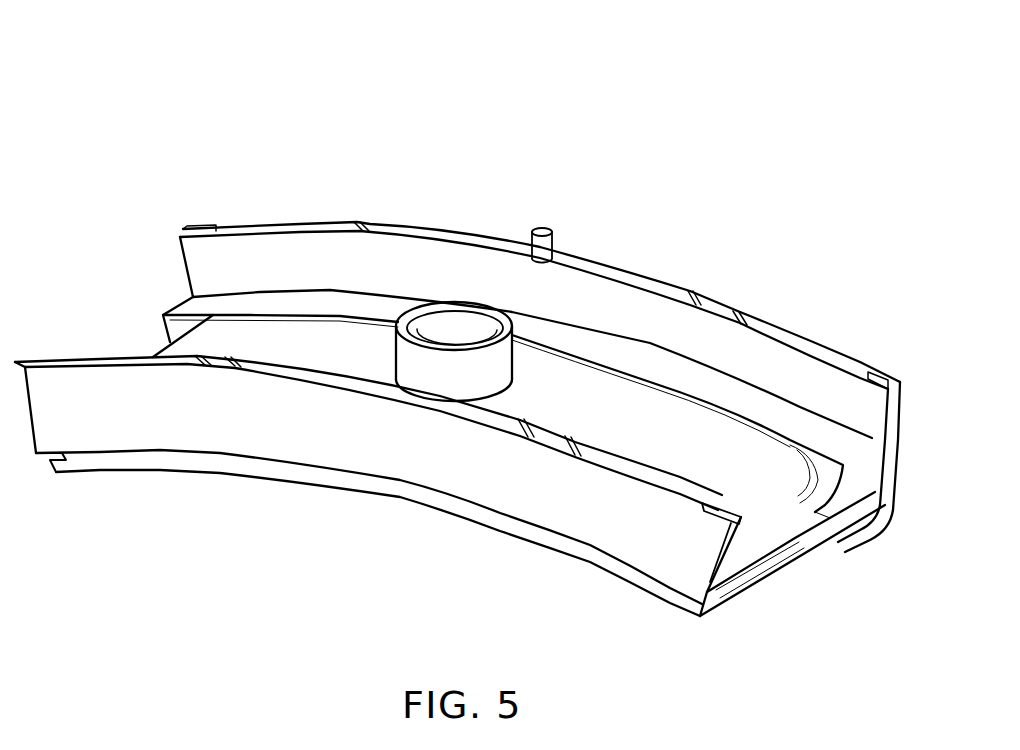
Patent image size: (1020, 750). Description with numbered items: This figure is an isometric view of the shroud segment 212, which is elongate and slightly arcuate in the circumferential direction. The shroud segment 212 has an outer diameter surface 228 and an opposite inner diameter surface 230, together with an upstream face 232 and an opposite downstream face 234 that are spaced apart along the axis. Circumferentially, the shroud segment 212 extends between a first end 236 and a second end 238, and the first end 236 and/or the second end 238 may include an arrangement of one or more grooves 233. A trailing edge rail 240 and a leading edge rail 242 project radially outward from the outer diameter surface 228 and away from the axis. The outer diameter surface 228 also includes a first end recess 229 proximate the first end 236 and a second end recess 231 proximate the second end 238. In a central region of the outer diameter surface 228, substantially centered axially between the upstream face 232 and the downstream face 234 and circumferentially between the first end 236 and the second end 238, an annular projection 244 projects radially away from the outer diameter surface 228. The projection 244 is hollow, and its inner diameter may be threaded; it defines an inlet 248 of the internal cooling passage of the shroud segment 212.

The shroud segment 212 is at (107, 106).
The outer diameter surface 228 is at (596, 406).
The first end recess 229 is at (155, 346).
The inner diameter surface 230 is at (548, 546).
The second end recess 231 is at (798, 512).
The upstream face 232 is at (283, 452).
The grooves 233 is at (752, 563).
The downstream face 234 is at (440, 230).
The first end 236 is at (170, 308).
The second end 238 is at (747, 580).
The trailing edge rail 240 is at (818, 342).
The leading edge rail 242 is at (633, 470).
The projection 244 is at (400, 358).
The inlet 248 is at (440, 325).